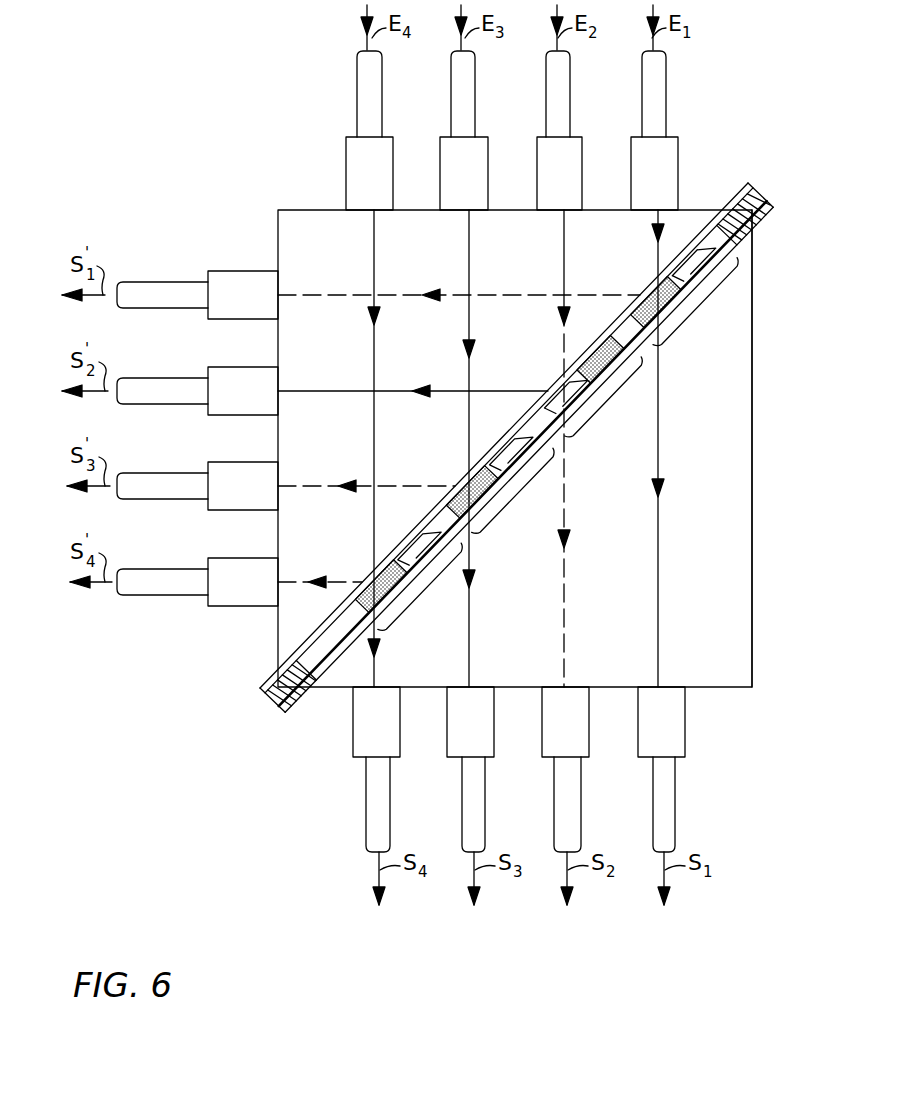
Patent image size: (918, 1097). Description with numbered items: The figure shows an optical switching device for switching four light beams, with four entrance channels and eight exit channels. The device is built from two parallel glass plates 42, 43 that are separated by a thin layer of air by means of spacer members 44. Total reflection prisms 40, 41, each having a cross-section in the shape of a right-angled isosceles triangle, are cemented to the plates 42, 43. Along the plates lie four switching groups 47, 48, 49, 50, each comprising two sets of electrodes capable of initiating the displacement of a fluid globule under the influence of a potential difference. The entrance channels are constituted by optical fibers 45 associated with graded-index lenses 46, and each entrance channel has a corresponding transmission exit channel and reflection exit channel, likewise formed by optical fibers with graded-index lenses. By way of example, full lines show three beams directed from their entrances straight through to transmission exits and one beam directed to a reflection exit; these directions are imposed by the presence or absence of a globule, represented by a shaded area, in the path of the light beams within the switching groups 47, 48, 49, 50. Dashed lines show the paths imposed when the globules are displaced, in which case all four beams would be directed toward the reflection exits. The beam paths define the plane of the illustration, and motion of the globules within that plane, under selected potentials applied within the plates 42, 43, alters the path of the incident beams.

The total reflection prism 40 is at (303, 217).
The total reflection prism 41 is at (744, 401).
The glass plate 42 is at (270, 673).
The glass plate 43 is at (303, 696).
The spacer member 44 is at (270, 698).
The optical fiber 45 is at (660, 77).
The graded-index lens 46 is at (672, 155).
The switching group 47 is at (699, 306).
The switching group 48 is at (608, 401).
The switching group 49 is at (516, 496).
The switching group 50 is at (424, 592).